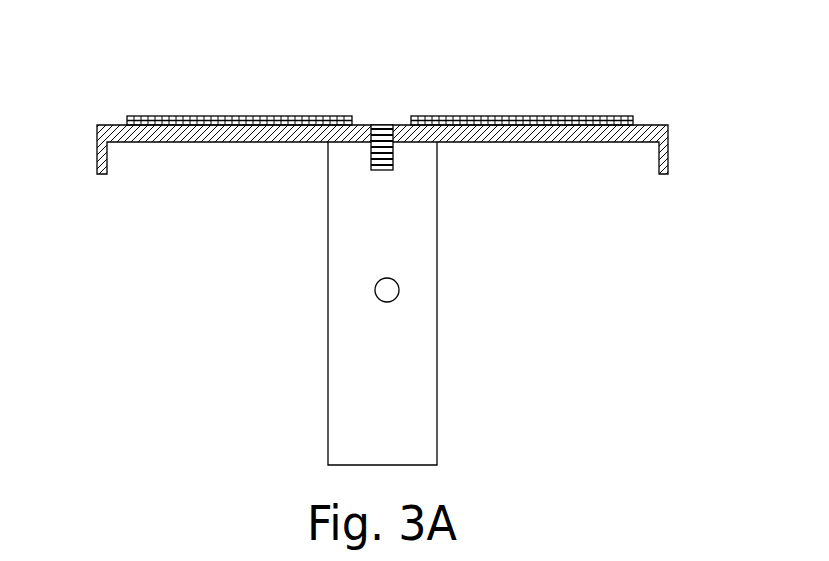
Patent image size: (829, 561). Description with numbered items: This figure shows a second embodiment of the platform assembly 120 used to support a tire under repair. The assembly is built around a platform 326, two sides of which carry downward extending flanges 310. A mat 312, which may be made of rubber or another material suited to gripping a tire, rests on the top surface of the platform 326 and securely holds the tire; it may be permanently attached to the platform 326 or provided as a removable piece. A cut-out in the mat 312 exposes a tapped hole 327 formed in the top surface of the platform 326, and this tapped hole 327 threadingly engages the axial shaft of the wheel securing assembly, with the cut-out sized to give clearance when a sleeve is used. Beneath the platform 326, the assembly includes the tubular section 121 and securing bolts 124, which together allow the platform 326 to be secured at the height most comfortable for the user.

The platform assembly 120 is at (688, 48).
The tubular section 121 is at (328, 264).
The securing bolts 124 is at (402, 282).
The downward extending flanges 310 is at (659, 174).
The mat 312 is at (133, 110).
The platform 326 is at (668, 129).
The tapped hole 327 is at (360, 160).